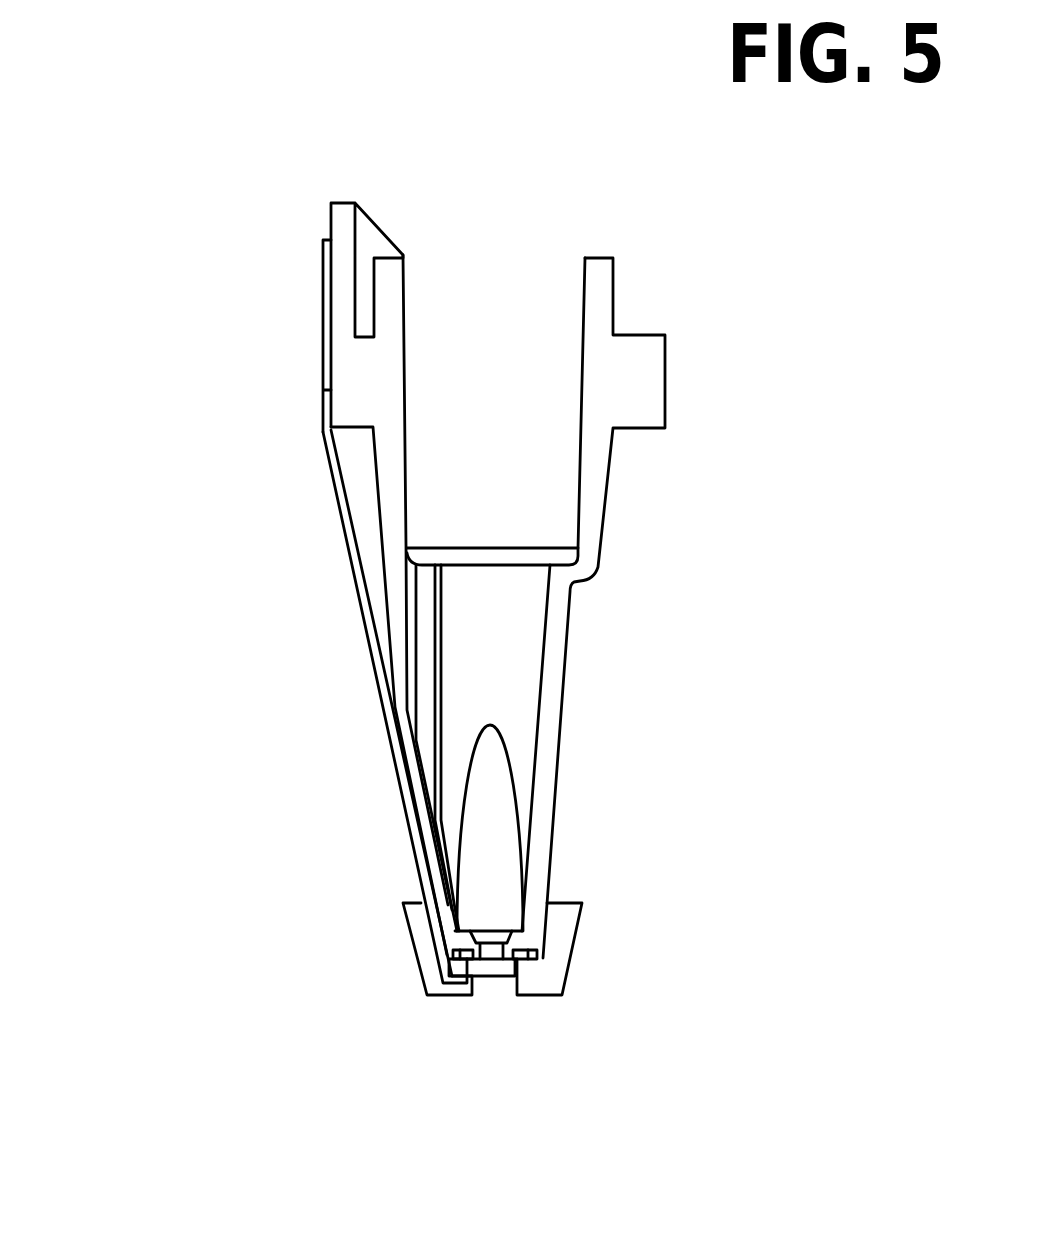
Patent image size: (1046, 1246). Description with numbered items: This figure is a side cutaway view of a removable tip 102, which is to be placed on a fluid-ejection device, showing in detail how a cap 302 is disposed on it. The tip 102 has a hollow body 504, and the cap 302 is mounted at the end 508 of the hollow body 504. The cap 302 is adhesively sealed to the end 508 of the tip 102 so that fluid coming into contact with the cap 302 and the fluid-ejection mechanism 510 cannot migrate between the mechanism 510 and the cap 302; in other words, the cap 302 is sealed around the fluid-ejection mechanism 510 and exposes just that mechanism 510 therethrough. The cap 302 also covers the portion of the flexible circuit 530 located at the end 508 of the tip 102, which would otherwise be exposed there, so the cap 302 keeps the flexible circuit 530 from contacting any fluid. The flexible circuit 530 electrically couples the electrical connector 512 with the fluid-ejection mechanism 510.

The removable tip 102 is at (229, 925).
The cap 302 is at (423, 960).
The hollow body 504 is at (557, 777).
The end 508 is at (523, 950).
The fluid-ejection mechanism 510 is at (493, 968).
The electrical connector 512 is at (323, 314).
The flexible circuit 530 is at (347, 547).